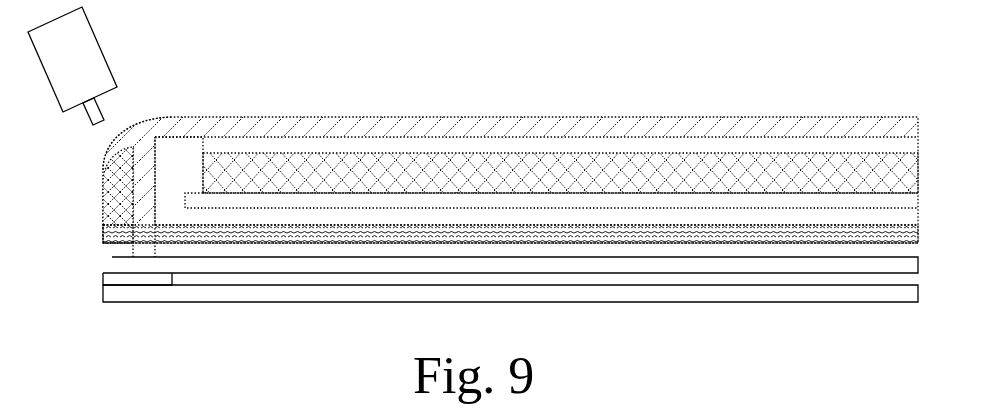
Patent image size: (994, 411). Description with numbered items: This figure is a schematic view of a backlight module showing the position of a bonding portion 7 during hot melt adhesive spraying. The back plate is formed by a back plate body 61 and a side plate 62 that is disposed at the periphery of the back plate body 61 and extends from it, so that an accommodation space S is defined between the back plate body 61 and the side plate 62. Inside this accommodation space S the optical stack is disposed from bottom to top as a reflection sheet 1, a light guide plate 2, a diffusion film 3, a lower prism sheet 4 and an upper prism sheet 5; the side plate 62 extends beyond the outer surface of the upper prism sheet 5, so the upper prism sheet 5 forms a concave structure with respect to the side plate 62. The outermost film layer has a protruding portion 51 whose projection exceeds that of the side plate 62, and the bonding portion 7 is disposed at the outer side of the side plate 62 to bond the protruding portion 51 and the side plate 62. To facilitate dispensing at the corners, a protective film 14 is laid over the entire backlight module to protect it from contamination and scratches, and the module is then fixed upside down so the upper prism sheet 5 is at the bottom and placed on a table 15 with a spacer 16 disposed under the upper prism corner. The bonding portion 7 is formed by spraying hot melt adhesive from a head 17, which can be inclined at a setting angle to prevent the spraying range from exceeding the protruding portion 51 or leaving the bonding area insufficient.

The head 17 is at (96, 38).
The accommodation space S is at (172, 140).
The back plate body 61 is at (240, 122).
The side plate 62 is at (147, 190).
The bonding portion 7 is at (122, 210).
The reflection sheet 1 is at (312, 147).
The light guide plate 2 is at (413, 167).
The diffusion film 3 is at (552, 203).
The lower prism sheet 4 is at (672, 217).
The upper prism sheet 5 is at (795, 237).
The protruding portion 51 is at (122, 240).
The protective film 14 is at (122, 271).
The spacer 16 is at (132, 283).
The table 15 is at (265, 303).